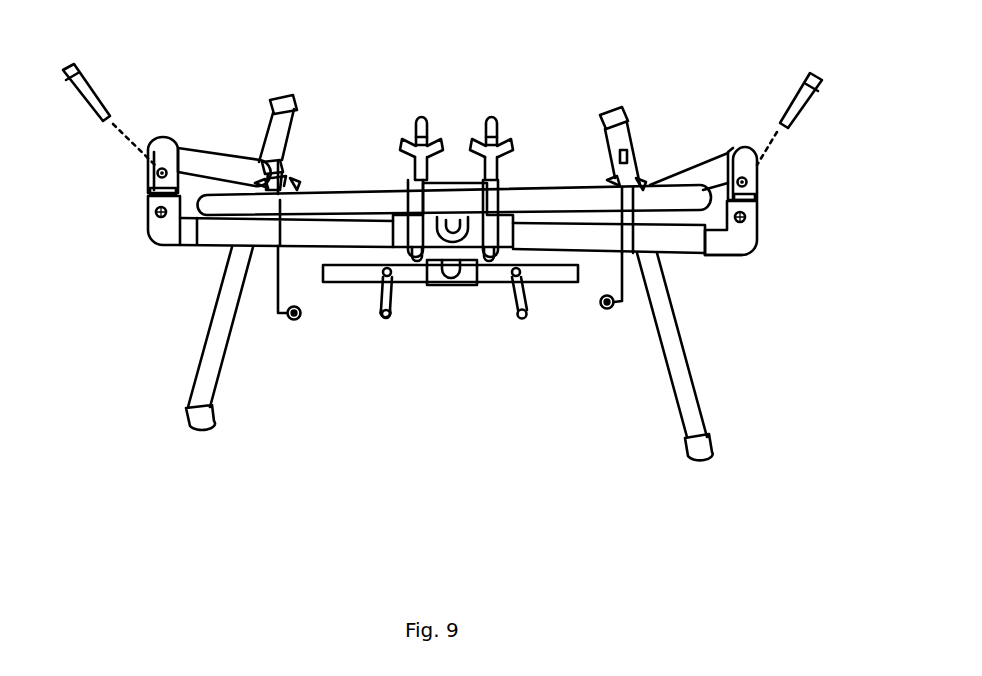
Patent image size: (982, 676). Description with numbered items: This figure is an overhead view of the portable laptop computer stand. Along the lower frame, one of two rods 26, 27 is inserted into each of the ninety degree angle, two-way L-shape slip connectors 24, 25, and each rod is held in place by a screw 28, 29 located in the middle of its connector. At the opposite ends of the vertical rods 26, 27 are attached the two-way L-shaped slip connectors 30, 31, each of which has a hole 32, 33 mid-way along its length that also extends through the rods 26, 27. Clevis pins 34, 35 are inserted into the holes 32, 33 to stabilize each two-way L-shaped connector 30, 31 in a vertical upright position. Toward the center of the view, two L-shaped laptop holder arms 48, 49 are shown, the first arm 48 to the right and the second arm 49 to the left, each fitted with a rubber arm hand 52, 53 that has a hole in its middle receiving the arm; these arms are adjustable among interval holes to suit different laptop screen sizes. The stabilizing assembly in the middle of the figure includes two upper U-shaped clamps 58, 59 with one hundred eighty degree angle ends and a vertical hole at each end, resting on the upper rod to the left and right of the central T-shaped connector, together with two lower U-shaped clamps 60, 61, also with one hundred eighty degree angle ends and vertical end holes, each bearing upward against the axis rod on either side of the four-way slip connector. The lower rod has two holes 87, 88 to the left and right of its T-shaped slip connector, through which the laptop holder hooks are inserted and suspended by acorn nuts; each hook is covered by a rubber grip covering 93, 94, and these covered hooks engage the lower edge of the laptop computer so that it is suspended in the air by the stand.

The 90 degree angle, two-way L-shape slip connector 24 is at (732, 258).
The 90 degree angle, two-way L-shape slip connector 25 is at (172, 232).
The rod 26 is at (148, 192).
The rod 27 is at (757, 199).
The screw 28 is at (155, 215).
The screw 29 is at (746, 222).
The two-way L-shaped slip connector 30 is at (150, 173).
The two-way L-shaped slip connector 31 is at (747, 180).
The hole 32 is at (172, 167).
The hole 33 is at (733, 173).
The clevis pin 34 is at (92, 85).
The clevis pin 35 is at (802, 93).
The L-shaped laptop holder arm 48 is at (623, 305).
The L-shaped laptop holder arm 49 is at (275, 313).
The rubber arm hand 52 is at (295, 322).
The rubber arm hand 53 is at (605, 312).
The U-shaped clamp 58 is at (493, 193).
The U-shaped clamp 59 is at (410, 187).
The lower U-shaped clamp 60 is at (412, 250).
The lower U-shaped clamp 61 is at (490, 252).
The hole 87 is at (512, 280).
The hole 88 is at (393, 310).
The rubber grip covering 93 is at (386, 320).
The rubber grip covering 94 is at (522, 322).